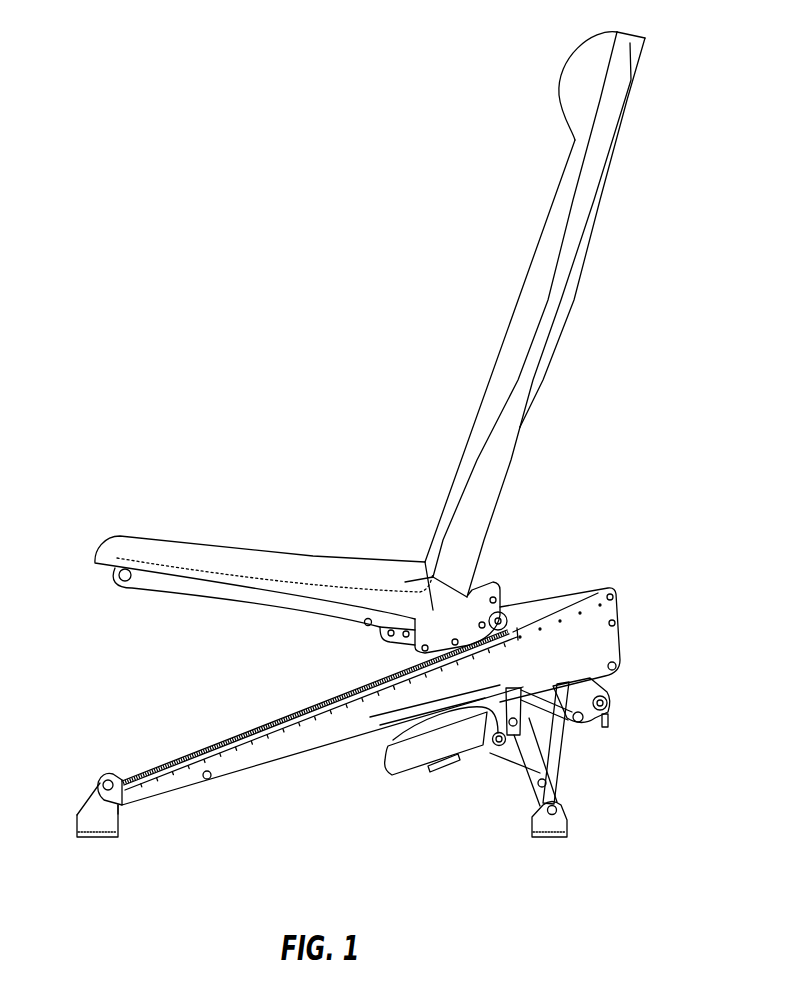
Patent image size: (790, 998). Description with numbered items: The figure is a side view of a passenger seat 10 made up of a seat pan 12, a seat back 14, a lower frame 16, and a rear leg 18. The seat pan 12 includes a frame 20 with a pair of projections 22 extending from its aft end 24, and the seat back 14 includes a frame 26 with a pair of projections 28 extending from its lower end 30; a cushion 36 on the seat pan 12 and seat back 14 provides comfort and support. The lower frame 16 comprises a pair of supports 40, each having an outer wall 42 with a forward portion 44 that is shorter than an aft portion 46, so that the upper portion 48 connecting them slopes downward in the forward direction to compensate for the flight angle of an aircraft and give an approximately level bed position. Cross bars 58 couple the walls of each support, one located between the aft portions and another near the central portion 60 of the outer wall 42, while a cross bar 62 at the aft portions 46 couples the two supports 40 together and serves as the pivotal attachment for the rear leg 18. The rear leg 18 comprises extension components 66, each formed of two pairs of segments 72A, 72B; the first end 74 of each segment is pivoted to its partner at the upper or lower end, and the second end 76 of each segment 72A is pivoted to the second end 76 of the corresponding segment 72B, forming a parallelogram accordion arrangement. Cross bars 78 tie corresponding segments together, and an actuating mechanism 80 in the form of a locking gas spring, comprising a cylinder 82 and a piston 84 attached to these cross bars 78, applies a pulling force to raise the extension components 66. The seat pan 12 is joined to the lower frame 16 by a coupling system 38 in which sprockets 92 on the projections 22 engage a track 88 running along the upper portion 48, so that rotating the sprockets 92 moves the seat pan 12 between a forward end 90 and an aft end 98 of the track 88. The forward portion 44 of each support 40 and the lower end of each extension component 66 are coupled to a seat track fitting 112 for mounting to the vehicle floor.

The seat 10 is at (567, 95).
The seat pan 12 is at (137, 550).
The seat back 14 is at (580, 230).
The lower frame 16 is at (277, 753).
The rear leg 18 is at (592, 778).
The frame 20 is at (185, 587).
The projections 22 is at (497, 583).
The aft end 24 is at (506, 612).
The frame 26 is at (630, 43).
The projections 28 is at (433, 637).
The lower end 30 is at (443, 615).
The cushion 36 is at (502, 360).
The coupling system 38 is at (497, 593).
The supports 40 is at (383, 722).
The outer wall 42 is at (163, 772).
The forward portion 44 is at (160, 797).
The aft portion 46 is at (613, 643).
The upper portion 48 is at (307, 712).
The cross bar 58 is at (613, 594).
The central portion 60 is at (182, 775).
The cross bar 62 is at (615, 589).
The extension components 66 is at (511, 737).
The segments 72A is at (600, 592).
The segments 72B is at (572, 745).
The first end 74 is at (560, 785).
The second end 76 is at (585, 720).
The cross bar 78 is at (608, 703).
The actuating mechanism 80 is at (388, 770).
The cylinder 82 is at (398, 778).
The piston 84 is at (450, 770).
The track 88 is at (227, 740).
The forward end 90 is at (125, 782).
The sprockets 92 is at (508, 617).
The aft end 98 is at (562, 612).
The seat track fitting 112 is at (90, 838).